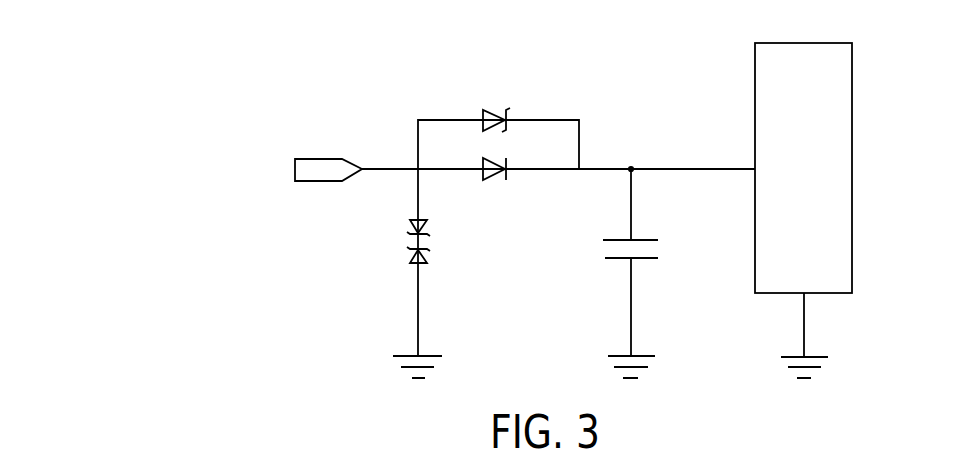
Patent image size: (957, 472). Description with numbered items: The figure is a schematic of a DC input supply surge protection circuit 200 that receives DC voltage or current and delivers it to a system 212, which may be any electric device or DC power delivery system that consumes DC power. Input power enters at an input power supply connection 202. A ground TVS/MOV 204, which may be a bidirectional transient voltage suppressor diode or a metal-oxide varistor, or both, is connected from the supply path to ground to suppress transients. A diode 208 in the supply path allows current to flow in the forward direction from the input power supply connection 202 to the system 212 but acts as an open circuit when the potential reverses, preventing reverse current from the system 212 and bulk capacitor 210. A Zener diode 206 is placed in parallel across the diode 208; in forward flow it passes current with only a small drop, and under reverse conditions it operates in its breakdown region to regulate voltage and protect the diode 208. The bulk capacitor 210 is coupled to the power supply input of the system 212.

The DC input supply surge protection circuit 200 is at (246, 63).
The input power supply connection 202 is at (318, 158).
The ground TVS/MOV 204 is at (427, 243).
The Zener diode 206 is at (497, 113).
The diode 208 is at (500, 176).
The bulk capacitor 210 is at (643, 239).
The system 212 is at (853, 166).